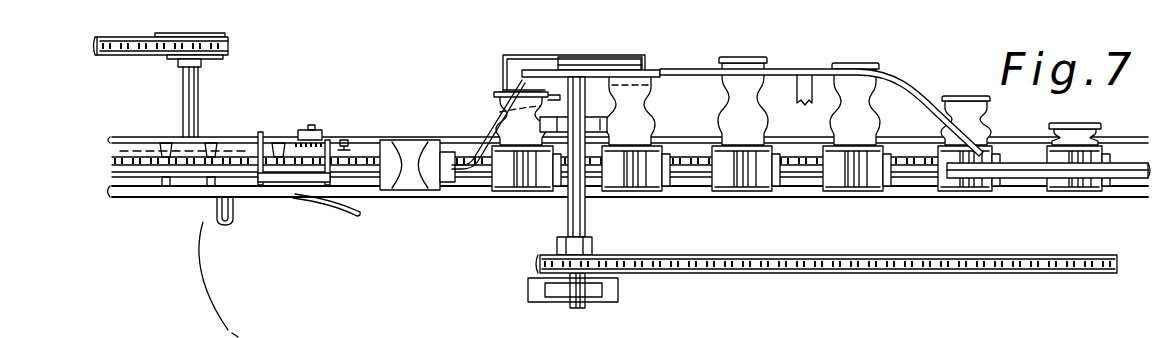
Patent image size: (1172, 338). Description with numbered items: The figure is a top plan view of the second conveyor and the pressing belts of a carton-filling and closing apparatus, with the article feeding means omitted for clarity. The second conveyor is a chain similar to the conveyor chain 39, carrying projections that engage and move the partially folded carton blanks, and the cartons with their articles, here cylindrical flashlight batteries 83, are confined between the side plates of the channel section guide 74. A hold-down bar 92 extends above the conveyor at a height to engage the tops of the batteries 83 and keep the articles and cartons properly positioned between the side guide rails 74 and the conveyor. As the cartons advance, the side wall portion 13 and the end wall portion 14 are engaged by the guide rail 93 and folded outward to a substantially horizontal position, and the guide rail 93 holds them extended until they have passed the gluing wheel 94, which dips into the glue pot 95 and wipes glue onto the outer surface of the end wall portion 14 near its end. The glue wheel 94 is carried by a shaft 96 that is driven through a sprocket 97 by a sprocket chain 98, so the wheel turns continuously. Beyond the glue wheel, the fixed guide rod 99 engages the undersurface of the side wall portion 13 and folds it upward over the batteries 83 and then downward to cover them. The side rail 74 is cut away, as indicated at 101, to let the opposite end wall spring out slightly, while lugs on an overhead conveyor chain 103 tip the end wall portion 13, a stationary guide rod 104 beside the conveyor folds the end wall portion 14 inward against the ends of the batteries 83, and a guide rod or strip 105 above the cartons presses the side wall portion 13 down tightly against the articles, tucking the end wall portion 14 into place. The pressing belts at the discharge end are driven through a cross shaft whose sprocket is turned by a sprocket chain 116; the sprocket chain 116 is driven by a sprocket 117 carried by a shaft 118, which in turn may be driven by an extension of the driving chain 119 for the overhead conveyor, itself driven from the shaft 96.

The second side wall portion 13 is at (632, 110).
The end wall portion 14 is at (757, 62).
The conveyor chain 39 is at (913, 177).
The channel section guide 74 is at (683, 197).
The cylindrical flashlight batteries 83 is at (528, 188).
The hold-down bar 92 is at (1020, 172).
The guide rail 93 is at (907, 88).
The gluing wheel 94 is at (527, 71).
The glue pot 95 is at (510, 70).
The shaft 96 is at (583, 220).
The sprocket 97 is at (548, 251).
The sprocket chain 98 is at (870, 257).
The fixed guide rod 99 is at (488, 128).
The cut away 101 is at (380, 197).
The conveyor chain 103 is at (293, 158).
The stationary guide rod 104 is at (340, 208).
The guide rod or strip 105 is at (290, 178).
The sprocket chain 116 is at (112, 51).
The sprocket 117 is at (213, 58).
The shaft 118 is at (197, 95).
The driving chain 119 is at (347, 140).